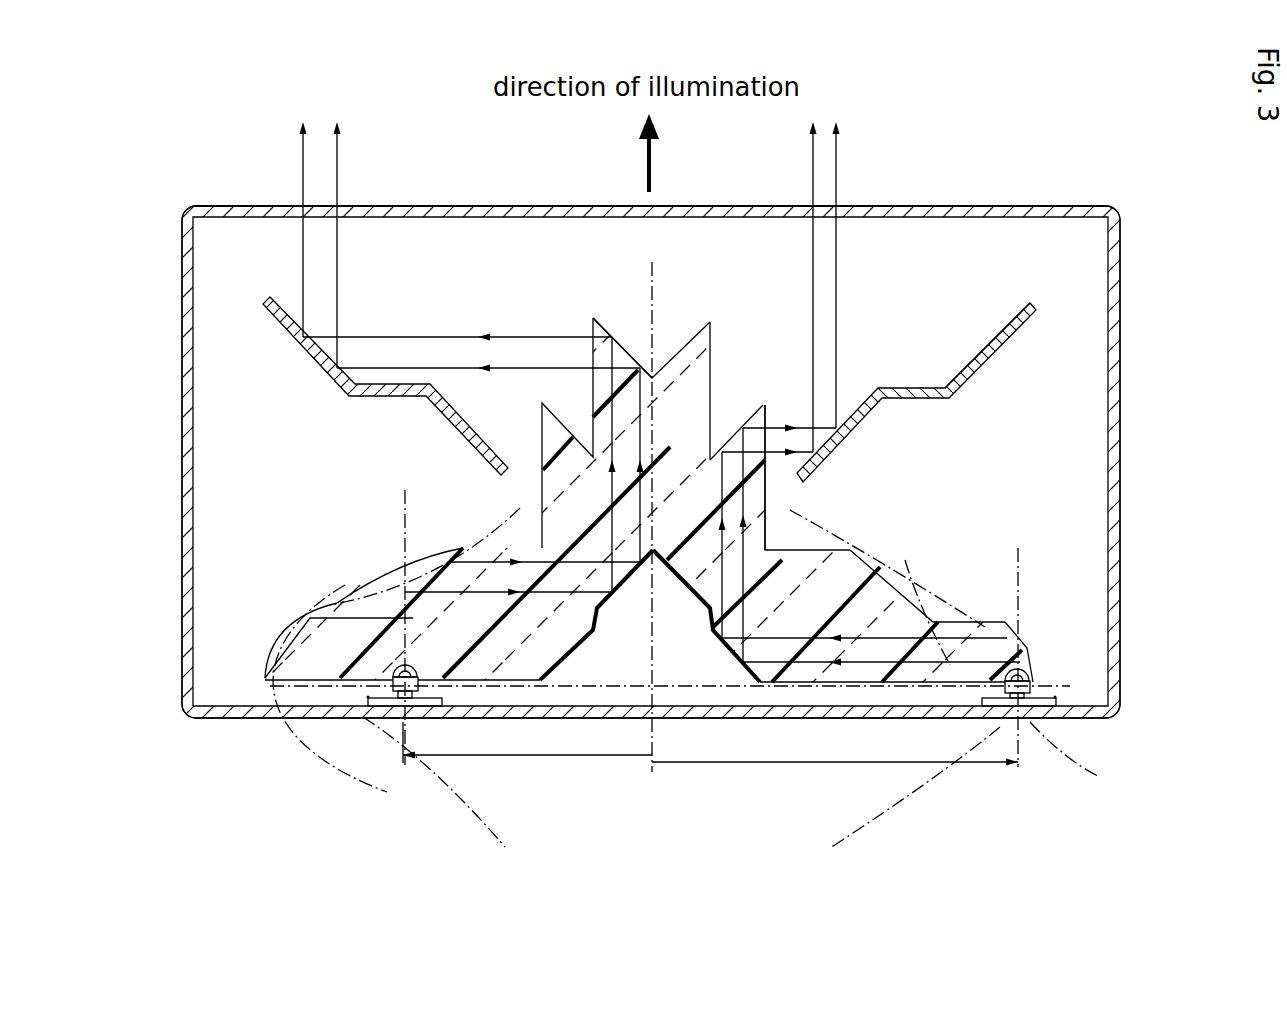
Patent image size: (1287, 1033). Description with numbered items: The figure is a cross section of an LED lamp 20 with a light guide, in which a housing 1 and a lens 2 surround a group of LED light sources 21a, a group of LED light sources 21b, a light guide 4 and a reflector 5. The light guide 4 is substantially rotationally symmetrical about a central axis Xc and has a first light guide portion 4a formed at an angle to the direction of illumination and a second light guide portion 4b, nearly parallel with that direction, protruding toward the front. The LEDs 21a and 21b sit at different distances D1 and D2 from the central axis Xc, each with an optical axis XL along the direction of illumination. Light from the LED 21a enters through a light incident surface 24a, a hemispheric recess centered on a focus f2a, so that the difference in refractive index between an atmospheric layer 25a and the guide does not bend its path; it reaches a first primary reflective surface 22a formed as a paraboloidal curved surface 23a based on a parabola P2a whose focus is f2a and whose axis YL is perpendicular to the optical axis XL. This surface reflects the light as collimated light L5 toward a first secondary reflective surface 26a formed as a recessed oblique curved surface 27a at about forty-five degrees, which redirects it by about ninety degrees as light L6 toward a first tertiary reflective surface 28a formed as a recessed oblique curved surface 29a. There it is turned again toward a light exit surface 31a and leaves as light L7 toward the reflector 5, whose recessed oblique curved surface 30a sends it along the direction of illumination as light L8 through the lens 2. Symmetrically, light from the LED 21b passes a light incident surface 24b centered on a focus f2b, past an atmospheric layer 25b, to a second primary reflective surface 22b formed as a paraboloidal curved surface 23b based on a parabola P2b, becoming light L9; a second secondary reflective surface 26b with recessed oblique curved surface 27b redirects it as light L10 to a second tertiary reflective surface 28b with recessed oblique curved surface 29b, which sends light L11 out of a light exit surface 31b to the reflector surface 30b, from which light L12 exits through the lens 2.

The housing 1 is at (1122, 431).
The lens 2 is at (890, 207).
The lamp 20 is at (1023, 187).
The light guide 4 is at (687, 370).
The first light guide portion 4a is at (860, 675).
The second light guide portion 4b is at (535, 472).
The reflector 5 is at (995, 350).
The LED light sources 21a is at (1020, 710).
The LED light sources 21b is at (410, 704).
The first primary reflective surface 22a is at (990, 623).
The second primary reflective surface 22b is at (415, 578).
The paraboloidal curved surface 23a is at (1020, 633).
The paraboloidal curved surface 23b is at (425, 578).
The light incident surface 24a is at (1035, 672).
The light incident surface 24b is at (340, 604).
The atmospheric layer 25a is at (988, 686).
The atmospheric layer 25b is at (352, 630).
The first secondary reflective surface 26a is at (727, 650).
The second secondary reflective surface 26b is at (610, 610).
The recessed oblique curved surface 27a is at (755, 650).
The recessed oblique curved surface 27b is at (636, 610).
The first tertiary reflective surface 28a is at (753, 418).
The second tertiary reflective surface 28b is at (590, 330).
The recessed oblique curved surface 29a is at (757, 415).
The recessed oblique curved surface 29b is at (627, 347).
The recessed oblique curved surface 30a is at (855, 400).
The recessed oblique curved surface 30b is at (290, 318).
The light exit surface 31a is at (768, 443).
The light exit surface 31b is at (602, 353).
The substantially collimated light L5 is at (868, 615).
The substantially collimated light L6 is at (712, 592).
The substantially collimated light L7 is at (778, 455).
The substantially collimated light L8 is at (812, 252).
The substantially collimated light L9 is at (548, 541).
The substantially collimated light L10 is at (613, 488).
The substantially collimated light L11 is at (437, 337).
The substantially collimated light L12 is at (303, 236).
The central axis Xc is at (662, 266).
The optical axis XL is at (398, 500).
The axis YL is at (307, 693).
The parabola P2a is at (940, 585).
The parabola P2b is at (483, 540).
The focus f2a is at (1055, 697).
The focus f2b is at (367, 697).
The distance D1 is at (835, 778).
The distance D2 is at (527, 759).